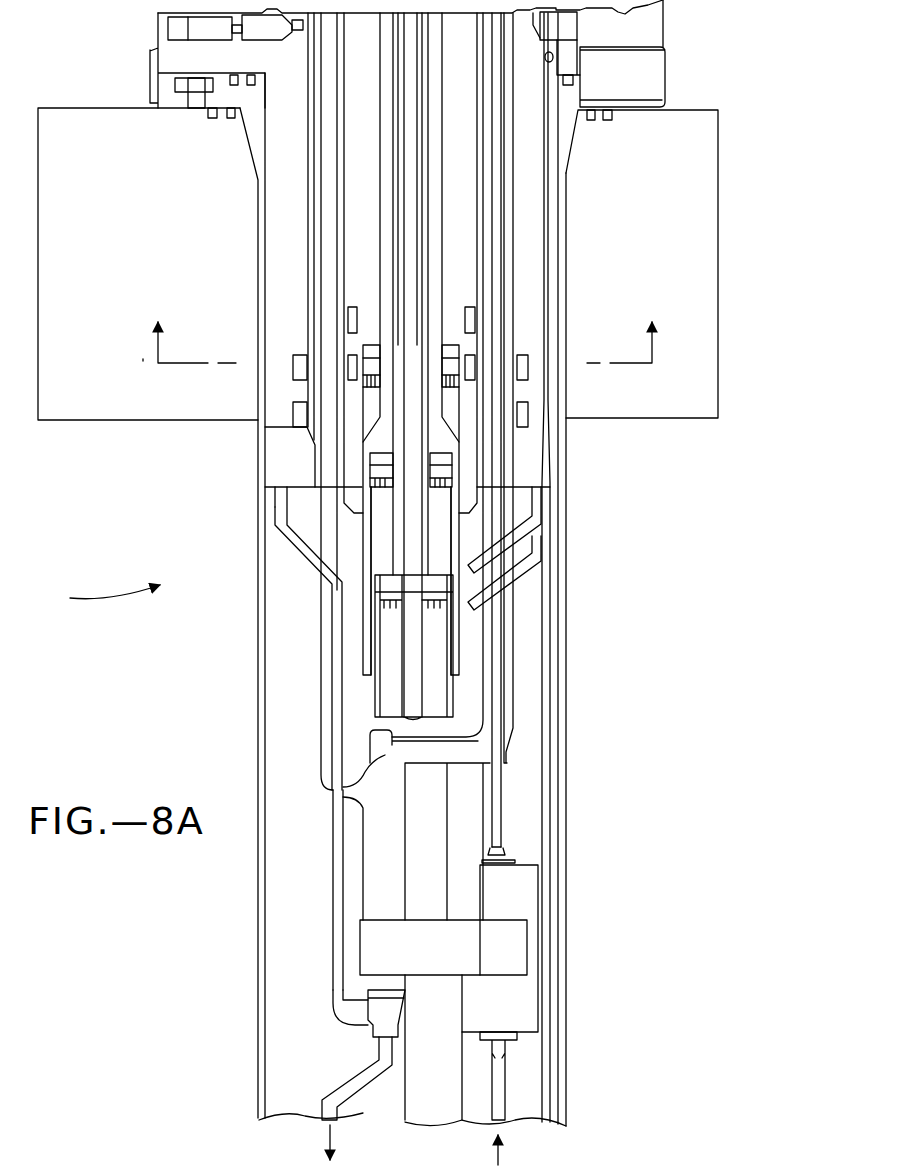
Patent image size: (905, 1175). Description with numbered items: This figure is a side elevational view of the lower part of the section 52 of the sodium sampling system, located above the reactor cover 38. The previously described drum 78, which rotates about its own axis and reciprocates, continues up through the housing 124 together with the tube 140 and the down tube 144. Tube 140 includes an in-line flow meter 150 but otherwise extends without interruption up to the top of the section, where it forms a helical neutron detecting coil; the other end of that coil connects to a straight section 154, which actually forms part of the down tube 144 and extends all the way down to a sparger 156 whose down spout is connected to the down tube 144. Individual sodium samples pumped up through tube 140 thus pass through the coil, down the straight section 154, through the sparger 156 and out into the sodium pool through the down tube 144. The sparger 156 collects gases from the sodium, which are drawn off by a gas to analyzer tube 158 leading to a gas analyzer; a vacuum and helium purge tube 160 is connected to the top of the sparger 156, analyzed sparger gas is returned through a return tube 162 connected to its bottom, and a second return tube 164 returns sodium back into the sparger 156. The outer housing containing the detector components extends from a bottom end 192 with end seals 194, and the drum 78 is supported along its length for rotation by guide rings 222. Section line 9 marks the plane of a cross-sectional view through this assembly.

The section line 9- 9 is at (400, 327).
The reactor cover 38 is at (641, 408).
The section 52 is at (97, 596).
The drum 78 is at (413, 1115).
The housing 124 is at (265, 1007).
The tube 140 is at (500, 807).
The down tube 144 is at (347, 1092).
The in-line flow meter 150 is at (528, 897).
The straight section 154 is at (325, 722).
The sparger 156 is at (382, 903).
The gas to analyzer tube 158 is at (508, 704).
The vacuum and helium purge tube 160 is at (522, 578).
The return tube 162 is at (340, 870).
The second return tube 164 is at (522, 540).
The bottom end 192 is at (283, 468).
The end seals 194 is at (295, 368).
The guide rings 222 is at (363, 378).